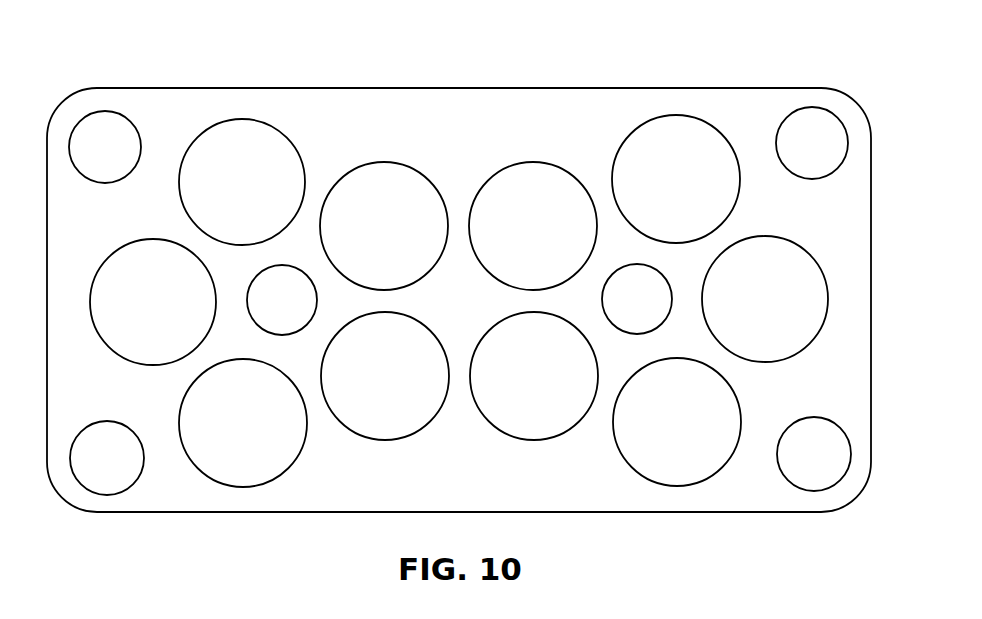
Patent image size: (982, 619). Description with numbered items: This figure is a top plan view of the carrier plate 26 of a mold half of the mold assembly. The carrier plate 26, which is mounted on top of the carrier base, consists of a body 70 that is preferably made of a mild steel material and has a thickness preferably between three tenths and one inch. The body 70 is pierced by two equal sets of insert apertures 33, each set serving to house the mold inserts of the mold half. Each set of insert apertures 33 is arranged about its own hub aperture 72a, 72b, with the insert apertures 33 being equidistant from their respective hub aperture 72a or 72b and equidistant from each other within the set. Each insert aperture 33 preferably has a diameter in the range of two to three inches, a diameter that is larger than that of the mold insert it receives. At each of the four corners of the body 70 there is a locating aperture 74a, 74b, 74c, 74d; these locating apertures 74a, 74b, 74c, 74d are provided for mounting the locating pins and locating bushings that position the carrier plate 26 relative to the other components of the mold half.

The carrier plate 26 is at (459, 260).
The body 70 is at (373, 100).
The insert apertures 33 is at (257, 120).
The hub aperture 72a is at (251, 304).
The hub aperture 72b is at (665, 304).
The locating aperture 74a is at (818, 488).
The locating aperture 74b is at (107, 492).
The locating aperture 74c is at (798, 118).
The locating aperture 74d is at (97, 112).